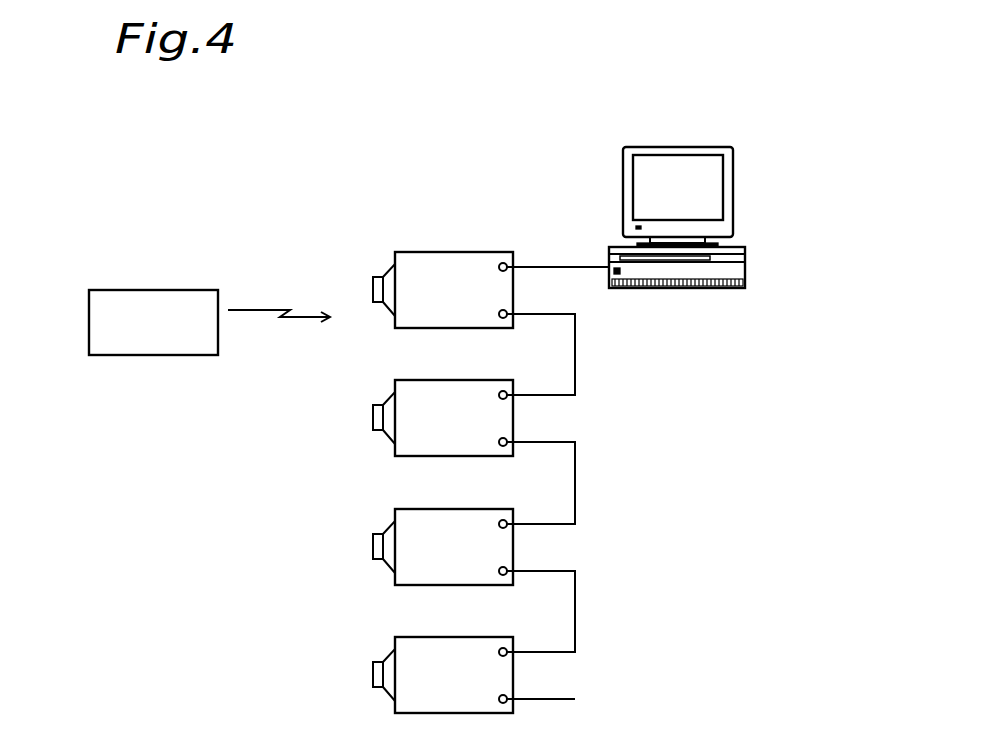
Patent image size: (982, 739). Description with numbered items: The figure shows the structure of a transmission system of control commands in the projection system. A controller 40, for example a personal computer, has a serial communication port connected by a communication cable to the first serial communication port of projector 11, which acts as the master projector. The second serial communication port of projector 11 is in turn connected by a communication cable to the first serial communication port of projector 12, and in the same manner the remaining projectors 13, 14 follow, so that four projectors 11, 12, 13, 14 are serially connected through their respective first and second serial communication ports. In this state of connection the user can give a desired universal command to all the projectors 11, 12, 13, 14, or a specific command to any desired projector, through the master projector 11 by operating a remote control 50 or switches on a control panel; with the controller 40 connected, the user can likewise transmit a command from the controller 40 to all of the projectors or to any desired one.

The projector 11 is at (457, 252).
The projector 12 is at (457, 380).
The projector 13 is at (457, 509).
The projector 14 is at (457, 637).
The controller 40 is at (665, 288).
The remote control 50 is at (157, 290).